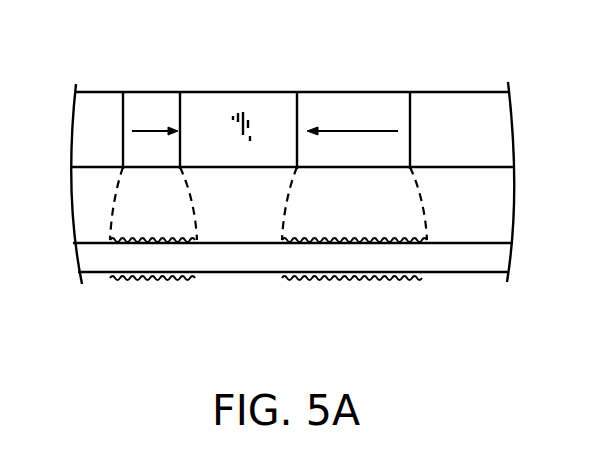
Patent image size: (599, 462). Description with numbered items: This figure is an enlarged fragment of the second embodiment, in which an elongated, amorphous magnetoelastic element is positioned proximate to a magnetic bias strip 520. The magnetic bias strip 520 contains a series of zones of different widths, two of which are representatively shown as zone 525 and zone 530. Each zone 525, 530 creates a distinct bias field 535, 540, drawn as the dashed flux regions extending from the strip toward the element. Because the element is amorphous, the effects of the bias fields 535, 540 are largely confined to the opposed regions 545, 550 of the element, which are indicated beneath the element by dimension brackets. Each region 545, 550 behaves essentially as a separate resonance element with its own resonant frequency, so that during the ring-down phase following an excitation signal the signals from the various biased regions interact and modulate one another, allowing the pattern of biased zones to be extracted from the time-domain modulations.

The magnetic bias strip 520 is at (238, 91).
The zone 525 is at (150, 102).
The zone 530 is at (353, 102).
The bias field 535 is at (183, 205).
The bias field 540 is at (418, 197).
The region 545 is at (203, 283).
The region 550 is at (428, 283).